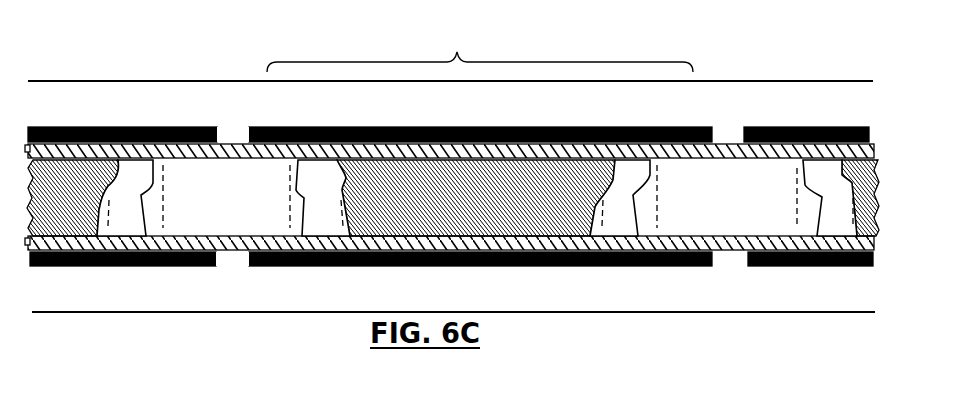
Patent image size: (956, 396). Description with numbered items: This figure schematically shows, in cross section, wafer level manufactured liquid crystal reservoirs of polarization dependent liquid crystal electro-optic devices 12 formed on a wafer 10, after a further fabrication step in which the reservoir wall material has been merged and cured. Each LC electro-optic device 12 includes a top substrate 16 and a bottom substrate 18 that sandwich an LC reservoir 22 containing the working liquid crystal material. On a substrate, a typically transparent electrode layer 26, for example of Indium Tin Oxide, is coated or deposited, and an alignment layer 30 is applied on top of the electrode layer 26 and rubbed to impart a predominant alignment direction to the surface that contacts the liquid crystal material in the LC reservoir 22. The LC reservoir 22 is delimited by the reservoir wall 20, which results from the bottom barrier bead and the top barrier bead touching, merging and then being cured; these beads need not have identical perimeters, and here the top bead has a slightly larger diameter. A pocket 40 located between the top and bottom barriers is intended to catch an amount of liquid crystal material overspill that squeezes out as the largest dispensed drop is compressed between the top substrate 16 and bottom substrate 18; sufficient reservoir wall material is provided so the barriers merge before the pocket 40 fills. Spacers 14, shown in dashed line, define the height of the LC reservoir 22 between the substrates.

The wafer 10 is at (781, 332).
The LC electro-optic device 12 is at (480, 48).
The spacers 14 is at (292, 208).
The top substrate 16 is at (829, 112).
The bottom substrate 18 is at (829, 303).
The reservoir wall 20 is at (660, 174).
The LC reservoir 22 is at (565, 217).
The electrode layer 26 is at (100, 124).
The alignment layer 30 is at (237, 146).
The pocket 40 is at (597, 168).